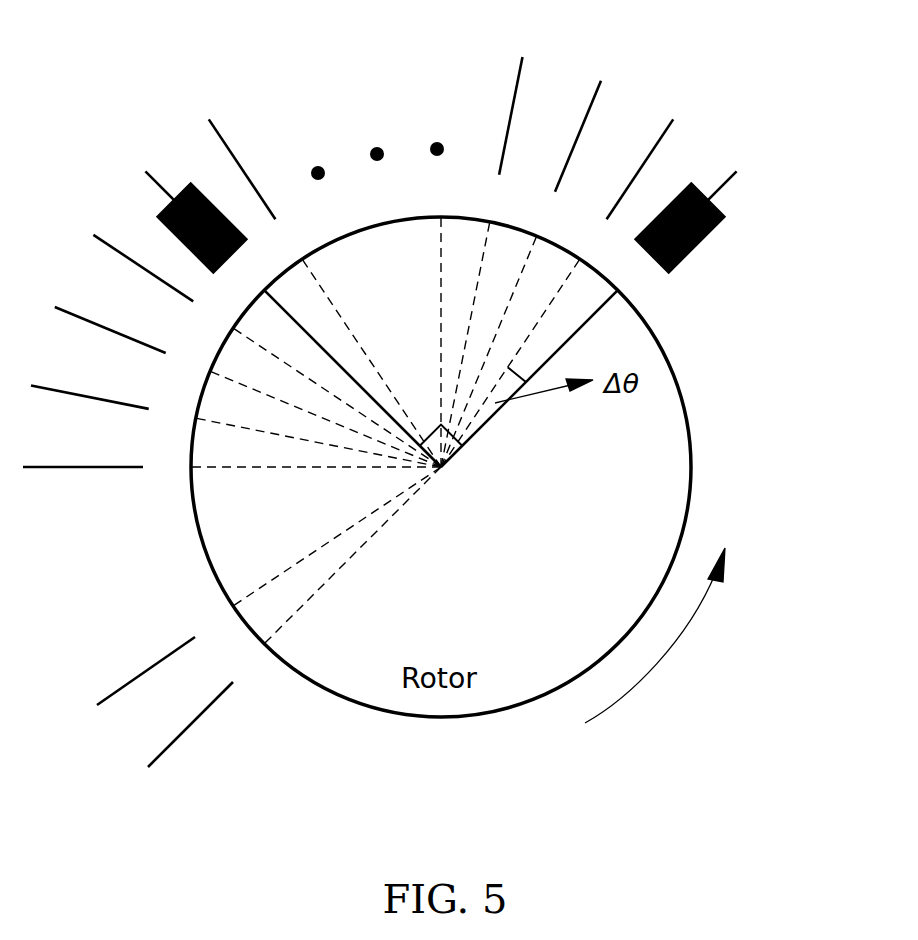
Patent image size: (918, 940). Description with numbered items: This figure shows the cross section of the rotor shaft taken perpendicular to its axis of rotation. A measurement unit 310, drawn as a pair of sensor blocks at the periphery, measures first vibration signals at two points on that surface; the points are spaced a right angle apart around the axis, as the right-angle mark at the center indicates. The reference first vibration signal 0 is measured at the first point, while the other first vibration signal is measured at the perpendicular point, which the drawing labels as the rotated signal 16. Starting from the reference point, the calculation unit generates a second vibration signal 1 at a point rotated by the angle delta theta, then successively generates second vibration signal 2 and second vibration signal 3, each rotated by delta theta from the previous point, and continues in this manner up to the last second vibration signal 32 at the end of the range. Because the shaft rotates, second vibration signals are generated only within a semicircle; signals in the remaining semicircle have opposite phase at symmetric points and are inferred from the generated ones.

The measurement unit 310 is at (698, 245).
The first vibration signal x0 0 is at (711, 194).
The second vibration signal x1 1 is at (656, 150).
The second vibration signal x2 2 is at (590, 117).
The second vibration signal x3 3 is at (520, 98).
The second vibration signal x16 16 is at (147, 189).
The second vibration signal x32 32 is at (174, 747).